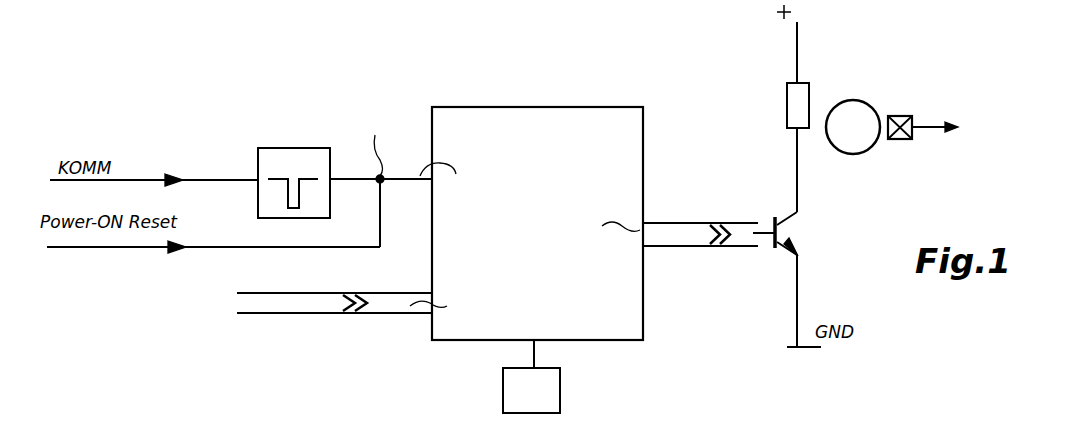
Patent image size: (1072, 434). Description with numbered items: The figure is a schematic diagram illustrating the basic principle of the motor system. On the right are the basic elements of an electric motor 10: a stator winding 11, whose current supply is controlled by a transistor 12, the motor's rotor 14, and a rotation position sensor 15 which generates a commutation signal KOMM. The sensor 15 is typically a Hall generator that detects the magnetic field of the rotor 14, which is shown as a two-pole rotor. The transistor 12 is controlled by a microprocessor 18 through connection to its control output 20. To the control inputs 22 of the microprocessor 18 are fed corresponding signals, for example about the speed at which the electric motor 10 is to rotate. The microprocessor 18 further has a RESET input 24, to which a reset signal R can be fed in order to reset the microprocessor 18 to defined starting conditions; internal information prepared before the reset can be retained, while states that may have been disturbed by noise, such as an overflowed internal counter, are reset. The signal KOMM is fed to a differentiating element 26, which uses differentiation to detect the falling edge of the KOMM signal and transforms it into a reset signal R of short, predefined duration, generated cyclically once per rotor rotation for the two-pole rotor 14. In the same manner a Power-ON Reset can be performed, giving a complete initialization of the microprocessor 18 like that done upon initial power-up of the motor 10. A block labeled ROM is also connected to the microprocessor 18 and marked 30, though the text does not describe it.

The electric motor 10 is at (921, 128).
The stator winding 11 is at (787, 108).
The transistor 12 is at (770, 246).
The rotor 14 is at (868, 110).
The rotation position sensor 15 is at (900, 115).
The microprocessor 18 is at (581, 96).
The control output 20 is at (691, 222).
The control inputs 22 is at (317, 302).
The RESET input 24 is at (400, 180).
The differentiating element 26 is at (284, 148).
The ROM 30 is at (562, 387).